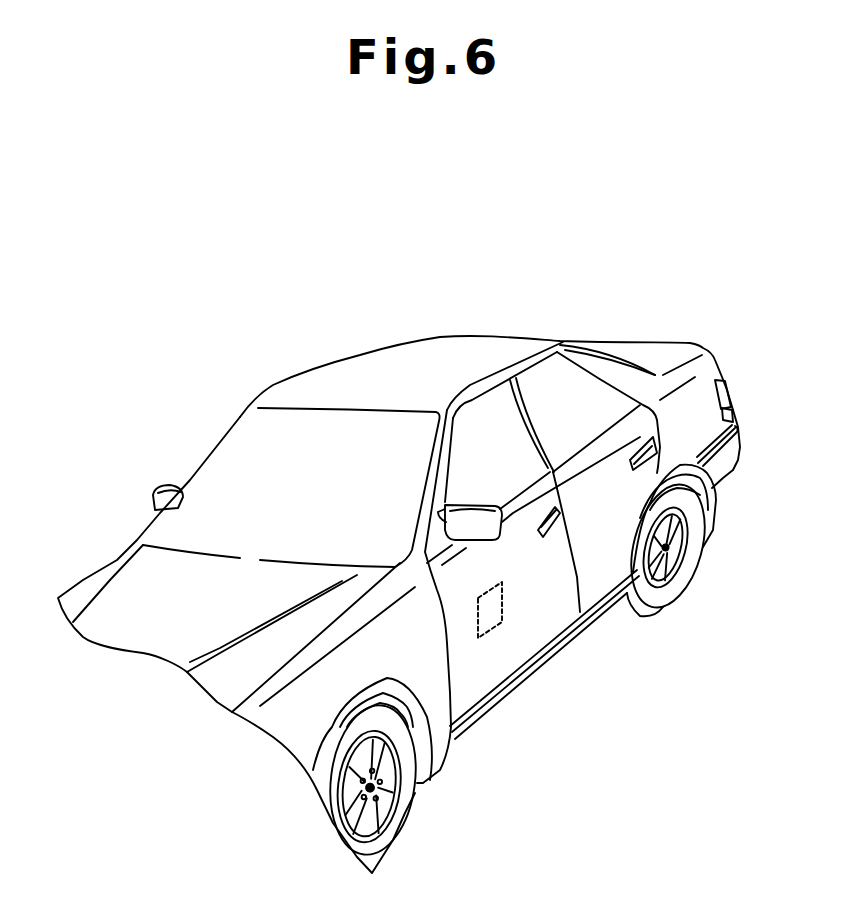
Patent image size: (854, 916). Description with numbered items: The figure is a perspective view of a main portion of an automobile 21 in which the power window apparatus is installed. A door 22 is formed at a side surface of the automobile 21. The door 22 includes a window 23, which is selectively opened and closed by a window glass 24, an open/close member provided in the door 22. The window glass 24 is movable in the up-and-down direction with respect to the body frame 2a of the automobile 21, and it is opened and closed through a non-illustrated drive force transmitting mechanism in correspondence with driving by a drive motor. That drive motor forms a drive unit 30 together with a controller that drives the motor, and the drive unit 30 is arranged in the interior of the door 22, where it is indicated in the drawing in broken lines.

The roof panel 2a is at (509, 337).
The rear body portion 21 is at (685, 350).
The side sill 22 is at (527, 650).
The roof side rail 23 is at (483, 397).
The center pillar 24 is at (522, 430).
The control unit 30 is at (508, 596).